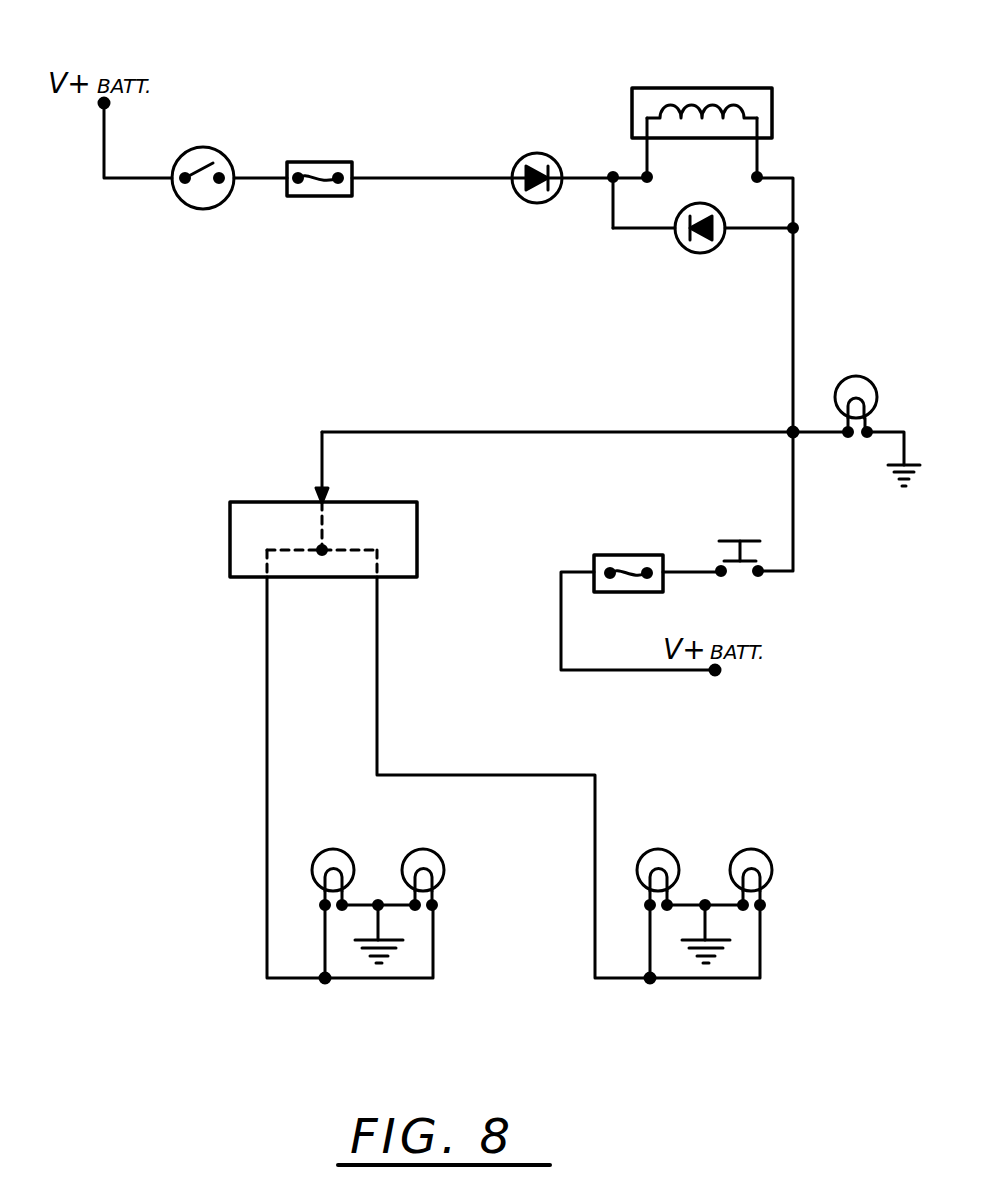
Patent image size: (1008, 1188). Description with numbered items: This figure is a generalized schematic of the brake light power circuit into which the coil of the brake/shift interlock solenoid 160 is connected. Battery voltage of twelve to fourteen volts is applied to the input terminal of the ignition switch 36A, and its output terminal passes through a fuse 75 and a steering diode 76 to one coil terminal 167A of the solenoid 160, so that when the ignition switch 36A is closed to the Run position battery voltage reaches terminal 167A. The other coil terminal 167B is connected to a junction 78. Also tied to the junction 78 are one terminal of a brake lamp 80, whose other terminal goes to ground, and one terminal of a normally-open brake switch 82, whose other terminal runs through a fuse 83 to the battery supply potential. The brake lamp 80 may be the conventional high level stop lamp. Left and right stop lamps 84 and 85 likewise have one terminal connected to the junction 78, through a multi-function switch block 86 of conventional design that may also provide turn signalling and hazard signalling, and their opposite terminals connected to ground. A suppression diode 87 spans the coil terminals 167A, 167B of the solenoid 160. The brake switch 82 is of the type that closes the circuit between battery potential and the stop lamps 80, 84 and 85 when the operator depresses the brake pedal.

The ignition switch 36A is at (210, 153).
The fuse 75 is at (317, 197).
The steering diode 76 is at (538, 152).
The solenoid 160 is at (772, 88).
The terminal of the coil 167A is at (642, 173).
The terminal of the coil 167B is at (758, 175).
The suppression diode 87 is at (683, 247).
The junction 78 is at (791, 437).
The brake lamp 80 is at (856, 376).
The multi-function switch block 86 is at (235, 545).
The brake switch 82 is at (752, 536).
The fuse 83 is at (634, 555).
The left stop lamp 84 is at (422, 847).
The right stop lamp 85 is at (745, 848).